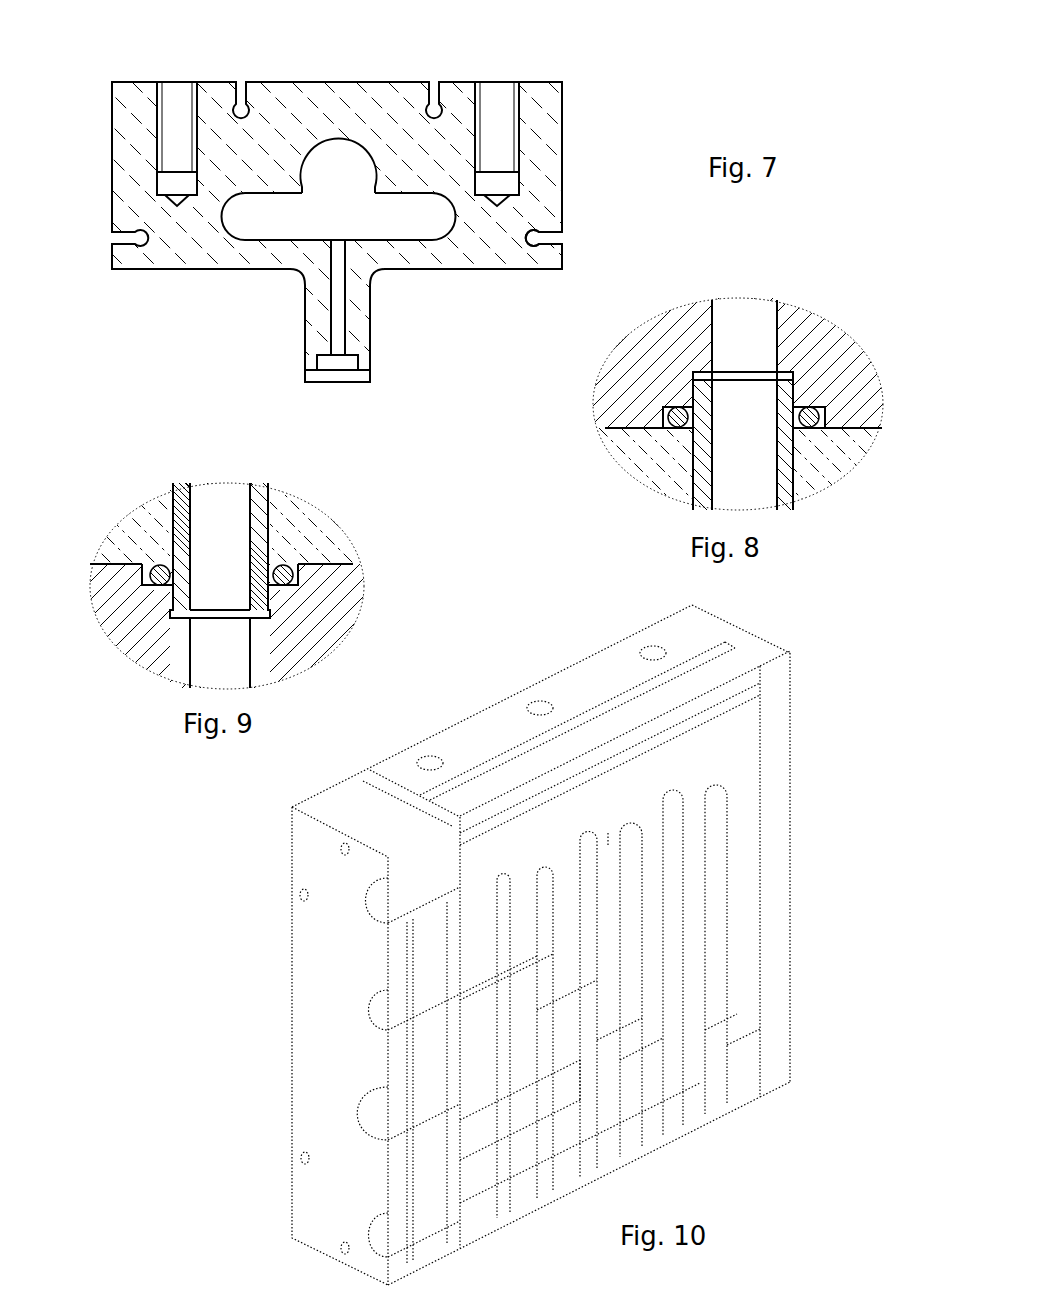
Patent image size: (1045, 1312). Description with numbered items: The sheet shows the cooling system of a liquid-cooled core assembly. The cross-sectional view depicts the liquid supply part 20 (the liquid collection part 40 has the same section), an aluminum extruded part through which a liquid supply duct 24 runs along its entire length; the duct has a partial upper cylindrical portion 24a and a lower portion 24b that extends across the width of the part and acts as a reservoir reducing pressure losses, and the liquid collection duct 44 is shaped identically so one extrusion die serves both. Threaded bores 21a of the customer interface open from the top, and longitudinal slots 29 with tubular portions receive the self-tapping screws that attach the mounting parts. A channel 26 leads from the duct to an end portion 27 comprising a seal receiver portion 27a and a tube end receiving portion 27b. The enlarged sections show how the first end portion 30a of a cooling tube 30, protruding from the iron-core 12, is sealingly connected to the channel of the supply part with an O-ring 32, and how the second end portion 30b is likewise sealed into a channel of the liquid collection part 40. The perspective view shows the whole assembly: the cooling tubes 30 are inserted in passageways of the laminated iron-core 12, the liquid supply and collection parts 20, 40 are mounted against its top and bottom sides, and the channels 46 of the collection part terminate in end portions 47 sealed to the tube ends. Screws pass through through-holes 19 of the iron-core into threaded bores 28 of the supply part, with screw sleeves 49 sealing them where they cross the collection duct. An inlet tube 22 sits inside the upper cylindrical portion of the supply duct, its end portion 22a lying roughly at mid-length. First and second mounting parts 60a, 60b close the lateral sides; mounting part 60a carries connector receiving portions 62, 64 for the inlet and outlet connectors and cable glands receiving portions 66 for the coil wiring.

In FIG. 8, the iron-core 12 is at (673, 465).
In FIG. 10, the iron-core 12 is at (740, 862).
In FIG. 10, the through-holes 19 is at (537, 952).
In FIG. 7, the liquid supply part 20 is at (424, 231).
In FIG. 8, the liquid supply part 20 is at (827, 358).
In FIG. 10, the liquid supply part 20 is at (745, 778).
In FIG. 7, the threaded bores 21a is at (497, 127).
In FIG. 10, the threaded bores 21a is at (655, 655).
In FIG. 10, the inlet tube 22 is at (541, 722).
In FIG. 10, the end portion 22a is at (608, 813).
In FIG. 7, the liquid supply duct 24 is at (369, 189).
In FIG. 7, the partial upper cylindrical portion 24a is at (338, 139).
In FIG. 7, the lower portion 24b is at (263, 240).
In FIG. 7, the channels 26 is at (347, 323).
In FIG. 8, the channels 26 is at (780, 332).
In FIG. 9, the channels 26 is at (255, 650).
In FIG. 10, the channels 26 is at (680, 828).
In FIG. 7, the end portion 27 is at (320, 354).
In FIG. 7, the seal receiver portion 27a is at (350, 376).
In FIG. 7, the tube end receiving portion 27b is at (318, 362).
In FIG. 10, the threaded bores 28 is at (533, 893).
In FIG. 7, the longitudinal slots 29 is at (571, 236).
In FIG. 9, the cooling tubes 30 is at (203, 576).
In FIG. 10, the cooling tubes 30 is at (740, 920).
In FIG. 8, the first end portion 30a is at (797, 395).
In FIG. 8, the second end portion 30b is at (749, 437).
In FIG. 9, the second end portion 30b is at (170, 598).
In FIG. 8, the O-ring 32 is at (670, 423).
In FIG. 9, the O-ring 32 is at (143, 583).
In FIG. 7, the liquid collection part 40 is at (618, 131).
In FIG. 9, the liquid collection part 40 is at (165, 638).
In FIG. 10, the liquid collection part 40 is at (740, 965).
In FIG. 7, the liquid collection duct 44 is at (322, 189).
In FIG. 10, the channels 46 is at (580, 1073).
In FIG. 10, the end portion 47 is at (602, 1033).
In FIG. 10, the screw sleeves 49 is at (737, 1035).
In FIG. 10, the first mounting part 60a is at (315, 875).
In FIG. 10, the second mounting part 60b is at (777, 703).
In FIG. 10, the connector receiving portion 62 is at (362, 919).
In FIG. 10, the connector receiving portion 64 is at (376, 1251).
In FIG. 10, the cable glands receiving portions 66 is at (351, 1131).